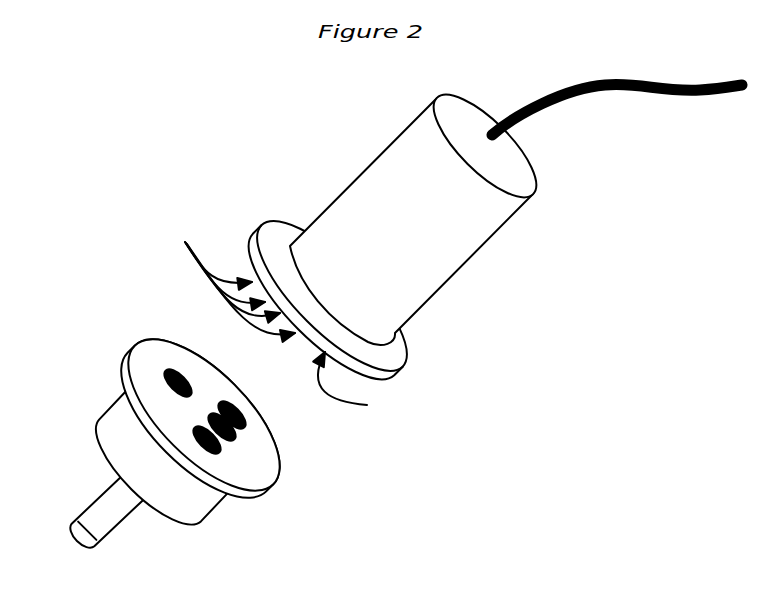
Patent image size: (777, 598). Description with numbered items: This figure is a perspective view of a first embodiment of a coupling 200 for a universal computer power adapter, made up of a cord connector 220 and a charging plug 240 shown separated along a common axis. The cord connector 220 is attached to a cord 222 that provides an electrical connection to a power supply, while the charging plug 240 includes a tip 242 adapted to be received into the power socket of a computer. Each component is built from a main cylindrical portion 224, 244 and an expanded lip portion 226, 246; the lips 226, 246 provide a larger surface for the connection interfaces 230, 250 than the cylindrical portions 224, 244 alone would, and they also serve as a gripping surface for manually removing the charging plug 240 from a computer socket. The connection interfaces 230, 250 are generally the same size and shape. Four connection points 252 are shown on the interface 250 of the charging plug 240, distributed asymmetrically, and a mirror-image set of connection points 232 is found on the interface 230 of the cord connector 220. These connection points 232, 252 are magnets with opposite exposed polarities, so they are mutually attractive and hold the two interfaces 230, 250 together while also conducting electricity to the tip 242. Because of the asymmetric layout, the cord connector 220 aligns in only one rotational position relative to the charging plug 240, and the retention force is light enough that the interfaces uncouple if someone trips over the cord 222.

The coupling 200 is at (167, 132).
The cord connector 220 is at (404, 212).
The cord 222 is at (556, 92).
The main cylindrical portion 224 is at (470, 250).
The lip portion 226 is at (378, 370).
The connection interface 230 is at (362, 391).
The connection points 232 is at (232, 281).
The charging plug 240 is at (221, 433).
The tip 242 is at (110, 520).
The main cylindrical portion 244 is at (117, 430).
The lip portion 246 is at (124, 365).
The connection interface 250 is at (260, 465).
The connection points 252 is at (223, 403).